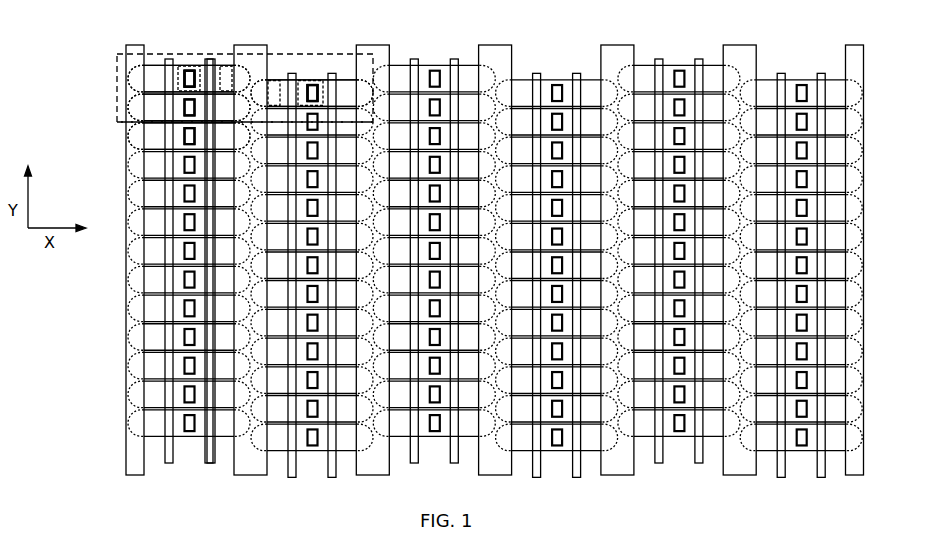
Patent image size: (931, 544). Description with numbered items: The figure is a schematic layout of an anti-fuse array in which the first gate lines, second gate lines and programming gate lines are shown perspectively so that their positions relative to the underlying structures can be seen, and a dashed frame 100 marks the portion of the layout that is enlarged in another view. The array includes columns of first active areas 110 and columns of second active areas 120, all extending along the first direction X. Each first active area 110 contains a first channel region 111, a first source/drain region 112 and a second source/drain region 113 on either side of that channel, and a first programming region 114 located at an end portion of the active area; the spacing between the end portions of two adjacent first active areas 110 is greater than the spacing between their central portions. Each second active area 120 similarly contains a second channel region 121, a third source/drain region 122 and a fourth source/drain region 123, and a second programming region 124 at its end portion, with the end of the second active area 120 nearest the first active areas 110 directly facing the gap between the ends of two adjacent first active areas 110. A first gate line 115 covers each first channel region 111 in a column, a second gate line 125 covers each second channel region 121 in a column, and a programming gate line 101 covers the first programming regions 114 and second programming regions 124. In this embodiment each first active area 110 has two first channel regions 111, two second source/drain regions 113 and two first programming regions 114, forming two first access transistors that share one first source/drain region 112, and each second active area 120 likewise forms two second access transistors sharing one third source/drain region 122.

The dashed frame 100 is at (121, 54).
The programming gate line 101 is at (295, 108).
The first active area 110 is at (153, 58).
The first channel region 111 is at (210, 68).
The first source/drain region 112 is at (181, 66).
The second source/drain region 113 is at (225, 66).
The first programming region 114 is at (242, 76).
The first gate line 115 is at (255, 84).
The second active area 120 is at (356, 72).
The second channel region 121 is at (303, 80).
The third source/drain region 122 is at (313, 81).
The fourth source/drain region 123 is at (276, 81).
The second programming region 124 is at (260, 91).
The second gate line 125 is at (255, 106).